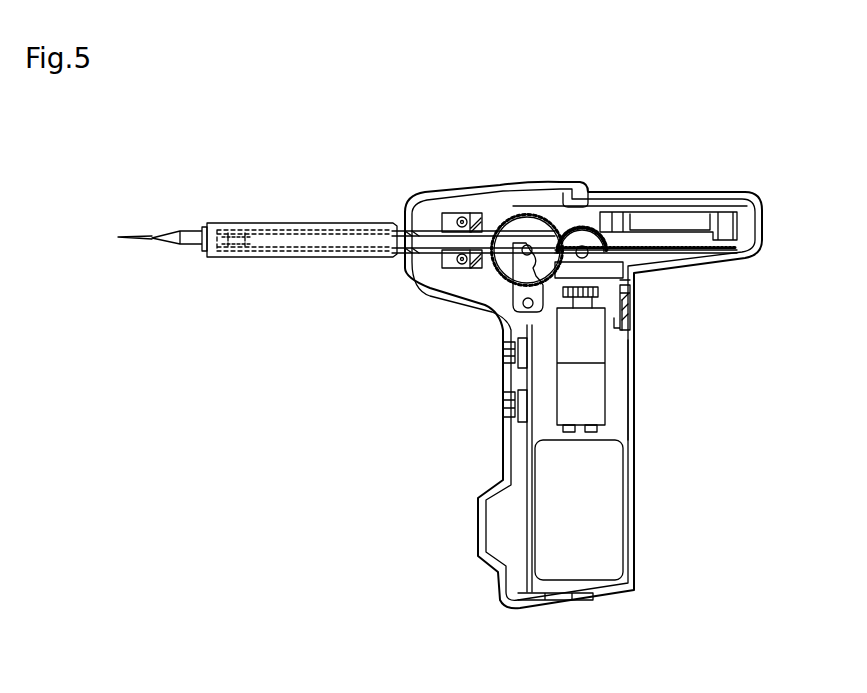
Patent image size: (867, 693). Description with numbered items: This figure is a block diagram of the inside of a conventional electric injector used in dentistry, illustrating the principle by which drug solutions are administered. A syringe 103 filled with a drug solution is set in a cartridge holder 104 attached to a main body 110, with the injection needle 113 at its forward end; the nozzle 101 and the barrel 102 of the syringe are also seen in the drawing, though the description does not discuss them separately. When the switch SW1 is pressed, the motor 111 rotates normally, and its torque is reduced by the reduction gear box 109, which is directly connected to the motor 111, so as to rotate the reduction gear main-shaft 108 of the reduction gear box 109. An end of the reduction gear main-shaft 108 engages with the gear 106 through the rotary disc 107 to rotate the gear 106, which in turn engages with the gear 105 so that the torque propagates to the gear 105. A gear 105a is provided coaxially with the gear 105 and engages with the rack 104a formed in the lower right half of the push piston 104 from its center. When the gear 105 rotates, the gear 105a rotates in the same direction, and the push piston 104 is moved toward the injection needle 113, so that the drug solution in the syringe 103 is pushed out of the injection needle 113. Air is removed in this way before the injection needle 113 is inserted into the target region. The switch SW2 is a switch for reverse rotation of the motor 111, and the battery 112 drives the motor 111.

The syringe nozzle 101 is at (182, 230).
The syringe barrel 102 is at (290, 222).
The syringe 103 is at (272, 240).
The push piston 104 is at (432, 207).
The rack 104a is at (677, 250).
The gear 105 is at (507, 213).
The gear 105a is at (505, 268).
The gear 106 is at (597, 230).
The rotary disc 107 is at (633, 308).
The reduction gear main-shaft 108 is at (555, 305).
The reduction gear box 109 is at (582, 338).
The main body 110 is at (632, 402).
The motor 111 is at (580, 407).
The battery 112 is at (603, 508).
The injection needle 113 is at (126, 253).
The switch SW1 is at (503, 352).
The switch SW2 is at (503, 405).